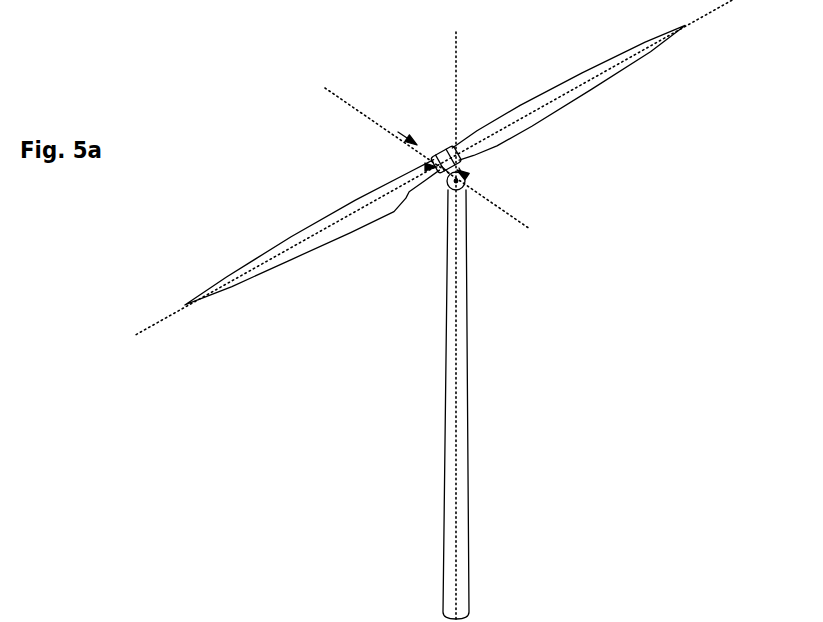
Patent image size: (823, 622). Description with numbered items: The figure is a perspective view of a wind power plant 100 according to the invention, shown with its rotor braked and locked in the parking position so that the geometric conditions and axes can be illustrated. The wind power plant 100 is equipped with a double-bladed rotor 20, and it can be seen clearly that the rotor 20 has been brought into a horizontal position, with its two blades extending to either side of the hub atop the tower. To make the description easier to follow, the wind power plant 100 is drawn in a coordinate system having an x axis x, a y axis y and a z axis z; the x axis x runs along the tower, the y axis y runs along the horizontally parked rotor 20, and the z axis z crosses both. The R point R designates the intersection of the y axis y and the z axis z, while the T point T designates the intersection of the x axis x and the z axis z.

The wind power plant 100 is at (445, 309).
The double-bladed rotor 20 is at (258, 258).
The x axis x is at (455, 83).
The y axis y is at (713, 7).
The z axis z is at (512, 222).
The R point R is at (430, 167).
The T point T is at (462, 171).